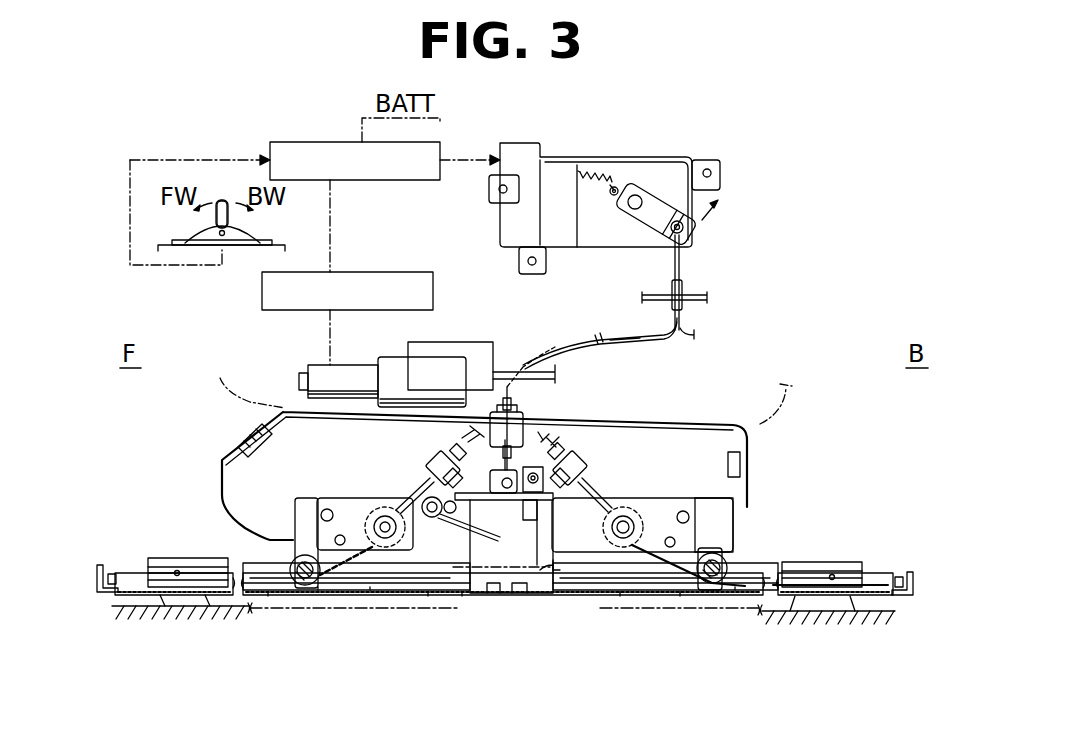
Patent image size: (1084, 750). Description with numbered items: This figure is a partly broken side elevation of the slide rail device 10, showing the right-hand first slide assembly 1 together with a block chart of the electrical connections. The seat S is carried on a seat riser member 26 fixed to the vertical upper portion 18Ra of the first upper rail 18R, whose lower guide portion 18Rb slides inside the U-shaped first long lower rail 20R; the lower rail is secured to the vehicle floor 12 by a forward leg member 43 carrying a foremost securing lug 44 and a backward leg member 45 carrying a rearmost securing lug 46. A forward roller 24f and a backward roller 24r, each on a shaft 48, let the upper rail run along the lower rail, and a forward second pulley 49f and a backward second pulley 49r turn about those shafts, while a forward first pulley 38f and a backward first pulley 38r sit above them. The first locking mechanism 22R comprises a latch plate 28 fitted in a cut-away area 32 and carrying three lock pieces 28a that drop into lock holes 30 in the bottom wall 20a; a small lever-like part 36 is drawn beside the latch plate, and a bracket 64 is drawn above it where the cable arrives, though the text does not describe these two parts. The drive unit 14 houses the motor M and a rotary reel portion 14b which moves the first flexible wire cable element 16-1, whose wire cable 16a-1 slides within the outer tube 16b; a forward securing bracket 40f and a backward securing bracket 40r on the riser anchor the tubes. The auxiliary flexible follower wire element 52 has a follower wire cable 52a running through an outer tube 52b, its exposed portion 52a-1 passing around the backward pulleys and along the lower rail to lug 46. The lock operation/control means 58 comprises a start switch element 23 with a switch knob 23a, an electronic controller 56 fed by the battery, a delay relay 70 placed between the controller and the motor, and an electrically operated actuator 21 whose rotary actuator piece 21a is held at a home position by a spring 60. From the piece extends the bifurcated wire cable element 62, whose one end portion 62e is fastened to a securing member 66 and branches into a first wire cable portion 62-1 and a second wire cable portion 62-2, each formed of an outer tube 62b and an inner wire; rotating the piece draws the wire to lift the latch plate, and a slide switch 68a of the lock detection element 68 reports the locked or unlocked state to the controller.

The slide rail device 10 is at (850, 246).
The first slide assembly 1 is at (832, 353).
The seat S is at (796, 408).
The vehicle floor 12 is at (235, 597).
The drive unit 14 is at (308, 370).
The rotary reel portion 14b is at (482, 341).
The electric motor M is at (299, 380).
The first flexible wire cable element 16-1 is at (456, 448).
The first flexible wire cable 16a-1 is at (192, 572).
The outer tube 16b is at (462, 438).
The first upper rail 18R is at (722, 500).
The vertical upper portion 18Ra is at (725, 520).
The lower guide portion 18Rb is at (370, 592).
The bottom wall 20a is at (345, 592).
The first long lower rail 20R is at (807, 562).
The electrically operated actuator 21 is at (661, 157).
The rotary actuator piece 21a is at (648, 198).
The first locking mechanism 22R is at (532, 612).
The start switch element 23 is at (260, 239).
The switch knob 23a is at (220, 200).
The forward roller 24f is at (290, 568).
The backward roller 24r is at (728, 560).
The seat riser member 26 is at (698, 421).
The latch plate 28 is at (535, 606).
The lock pieces 28a is at (520, 594).
The lock holes 30 is at (268, 597).
The cut-away area 32 is at (462, 597).
The release lever 36 is at (432, 518).
The forward first pulley 38f is at (373, 498).
The backward first pulley 38r is at (660, 508).
The forward securing bracket 40f is at (425, 468).
The backward securing bracket 40r is at (585, 462).
The forward leg member 43 is at (162, 608).
The foremost securing lug 44 is at (108, 565).
The backward leg member 45 is at (850, 613).
The rearmost securing lug 46 is at (906, 570).
The shaft 48 is at (300, 550).
The forward second pulley 49f is at (318, 592).
The backward second pulley 49r is at (735, 592).
The auxiliary flexible follower wire element 52 is at (546, 444).
The follower wire cable 52a is at (655, 597).
The exposed portion of follower wire cable 52a-1 is at (860, 580).
The outer tube 52b is at (562, 450).
The electronic controller 56 is at (316, 142).
The lock operation/control means 58 is at (738, 233).
The spring 60 is at (598, 172).
The bifurcated wire cable element 62 is at (639, 340).
The first wire cable portion 62-1 is at (612, 337).
The second wire cable portion 62-2 is at (692, 338).
The outer tube 62b is at (559, 345).
The one end portion 62e is at (685, 288).
The cable bracket 64 is at (521, 425).
The securing member 66 is at (700, 301).
The lock detection element 68 is at (540, 482).
The slide switch 68a is at (538, 515).
The delay relay 70 is at (389, 272).